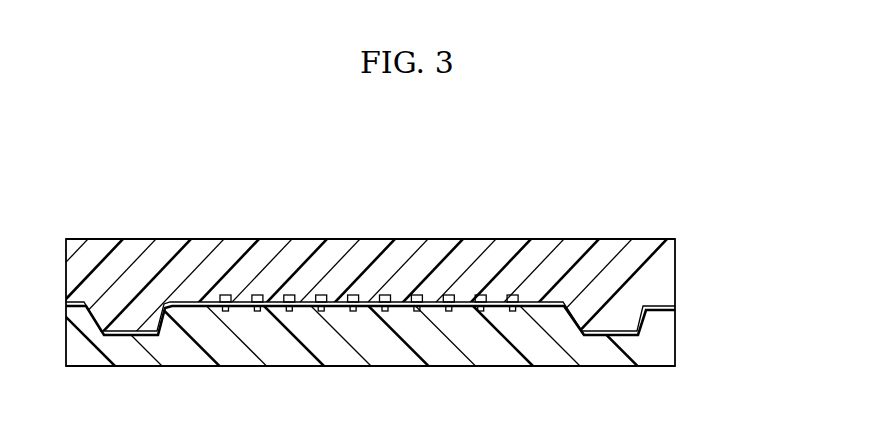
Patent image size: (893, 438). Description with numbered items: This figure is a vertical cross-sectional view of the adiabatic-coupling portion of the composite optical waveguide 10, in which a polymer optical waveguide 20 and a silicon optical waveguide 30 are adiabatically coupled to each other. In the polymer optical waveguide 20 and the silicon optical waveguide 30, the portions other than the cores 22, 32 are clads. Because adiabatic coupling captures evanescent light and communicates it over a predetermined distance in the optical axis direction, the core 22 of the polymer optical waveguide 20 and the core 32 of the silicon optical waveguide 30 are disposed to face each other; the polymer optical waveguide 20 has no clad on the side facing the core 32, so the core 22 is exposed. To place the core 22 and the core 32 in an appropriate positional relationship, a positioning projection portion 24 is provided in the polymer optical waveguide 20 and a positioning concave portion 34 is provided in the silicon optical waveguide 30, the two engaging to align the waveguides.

The composite optical waveguide 10 is at (364, 288).
The polymer optical waveguide 20 is at (664, 269).
The core 22 is at (416, 294).
The positioning projection portion 24 is at (646, 309).
The silicon optical waveguide 30 is at (663, 357).
The core 32 is at (449, 312).
The positioning concave portion 34 is at (646, 324).